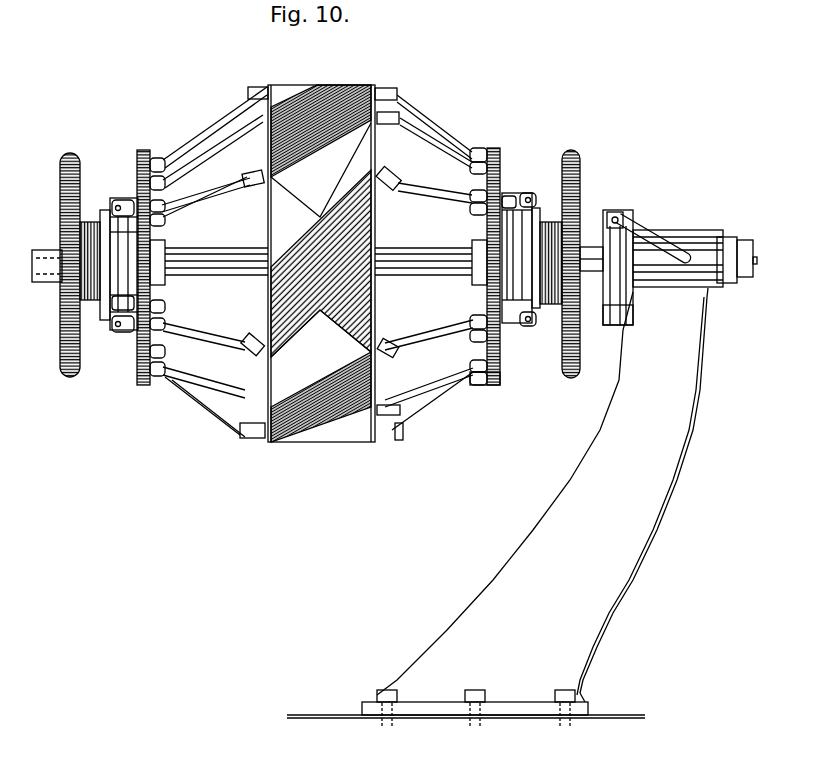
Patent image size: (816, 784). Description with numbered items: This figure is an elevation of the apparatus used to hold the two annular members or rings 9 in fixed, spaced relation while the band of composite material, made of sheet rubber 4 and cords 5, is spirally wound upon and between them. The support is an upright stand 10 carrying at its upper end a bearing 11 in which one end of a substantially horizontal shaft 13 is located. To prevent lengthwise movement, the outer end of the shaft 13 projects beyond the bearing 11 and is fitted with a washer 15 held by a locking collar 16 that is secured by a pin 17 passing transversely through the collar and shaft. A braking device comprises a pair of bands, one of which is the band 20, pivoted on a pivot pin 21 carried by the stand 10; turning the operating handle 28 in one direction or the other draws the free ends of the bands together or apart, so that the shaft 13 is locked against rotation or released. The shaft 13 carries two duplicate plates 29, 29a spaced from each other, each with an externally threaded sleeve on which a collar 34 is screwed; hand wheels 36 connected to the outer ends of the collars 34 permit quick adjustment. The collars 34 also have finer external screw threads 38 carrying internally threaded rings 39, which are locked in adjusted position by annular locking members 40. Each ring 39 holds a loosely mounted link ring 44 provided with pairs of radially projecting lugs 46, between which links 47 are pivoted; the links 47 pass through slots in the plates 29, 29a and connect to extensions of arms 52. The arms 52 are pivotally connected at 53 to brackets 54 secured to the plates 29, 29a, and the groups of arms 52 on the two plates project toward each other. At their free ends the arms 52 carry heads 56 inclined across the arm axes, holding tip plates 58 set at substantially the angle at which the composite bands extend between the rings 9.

The sheet rubber 4 is at (328, 321).
The cords 5 is at (336, 127).
The annular members or rings 9 is at (375, 306).
The upright stand 10 is at (645, 534).
The bearing 11 is at (700, 233).
The shaft 13 is at (407, 247).
The washer 15 is at (727, 285).
The locking collar 16 is at (745, 280).
The pin 17 is at (753, 260).
The brake band 20 is at (602, 280).
The pivot pin 21 is at (608, 320).
The operating handle 28 is at (640, 235).
The plate 29 is at (143, 149).
The plate 29a is at (493, 146).
The collar 34 is at (93, 318).
The hand wheel 36 is at (75, 172).
The external screw threads 38 is at (86, 226).
The ring 39 is at (122, 316).
The annular locking member 40 is at (530, 215).
The link ring 44 is at (498, 373).
The lugs 46 is at (116, 200).
The link 47 is at (131, 322).
The arm 52 is at (410, 130).
The pivotal connection 53 is at (170, 348).
The bracket 54 is at (463, 303).
The head 56 is at (247, 190).
The tip plate 58 is at (273, 357).